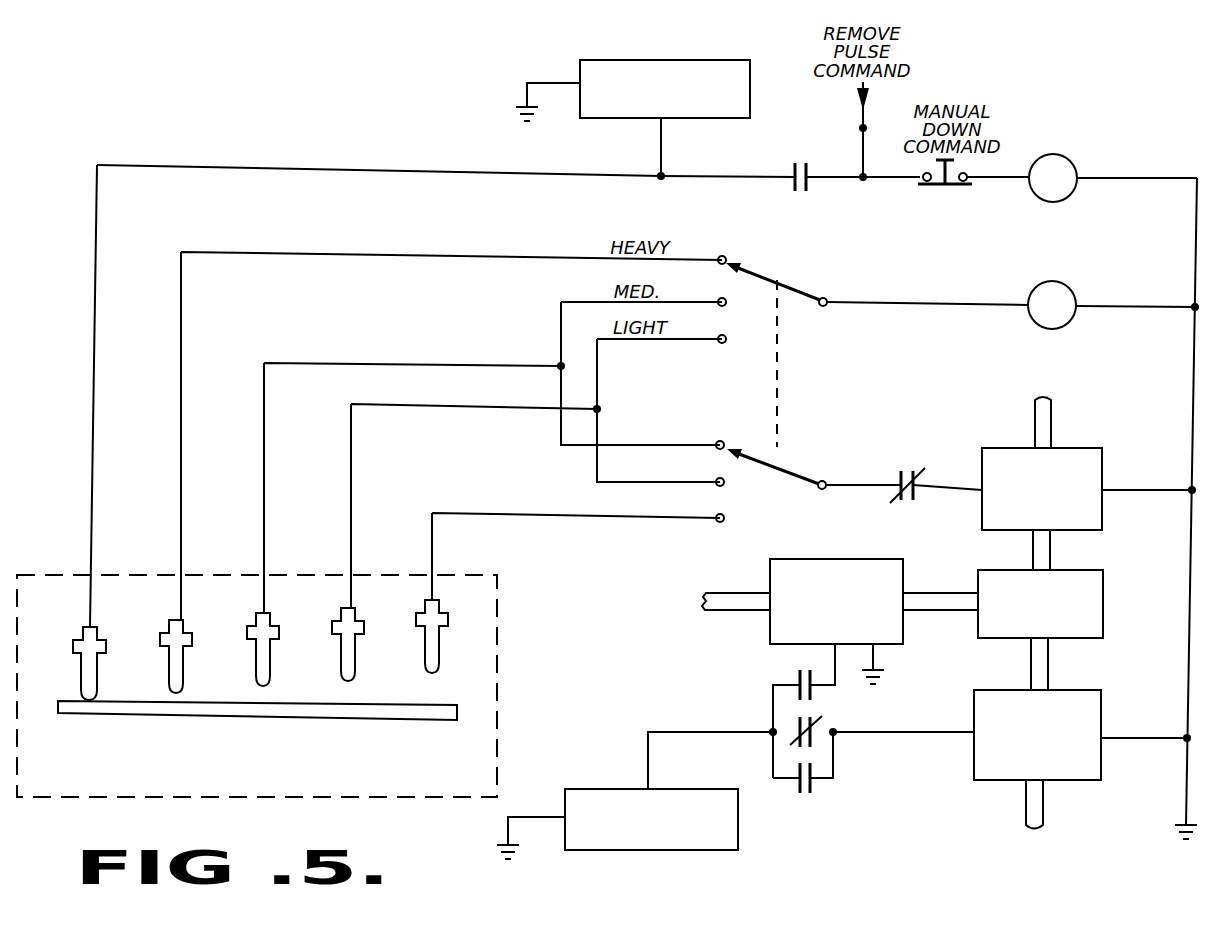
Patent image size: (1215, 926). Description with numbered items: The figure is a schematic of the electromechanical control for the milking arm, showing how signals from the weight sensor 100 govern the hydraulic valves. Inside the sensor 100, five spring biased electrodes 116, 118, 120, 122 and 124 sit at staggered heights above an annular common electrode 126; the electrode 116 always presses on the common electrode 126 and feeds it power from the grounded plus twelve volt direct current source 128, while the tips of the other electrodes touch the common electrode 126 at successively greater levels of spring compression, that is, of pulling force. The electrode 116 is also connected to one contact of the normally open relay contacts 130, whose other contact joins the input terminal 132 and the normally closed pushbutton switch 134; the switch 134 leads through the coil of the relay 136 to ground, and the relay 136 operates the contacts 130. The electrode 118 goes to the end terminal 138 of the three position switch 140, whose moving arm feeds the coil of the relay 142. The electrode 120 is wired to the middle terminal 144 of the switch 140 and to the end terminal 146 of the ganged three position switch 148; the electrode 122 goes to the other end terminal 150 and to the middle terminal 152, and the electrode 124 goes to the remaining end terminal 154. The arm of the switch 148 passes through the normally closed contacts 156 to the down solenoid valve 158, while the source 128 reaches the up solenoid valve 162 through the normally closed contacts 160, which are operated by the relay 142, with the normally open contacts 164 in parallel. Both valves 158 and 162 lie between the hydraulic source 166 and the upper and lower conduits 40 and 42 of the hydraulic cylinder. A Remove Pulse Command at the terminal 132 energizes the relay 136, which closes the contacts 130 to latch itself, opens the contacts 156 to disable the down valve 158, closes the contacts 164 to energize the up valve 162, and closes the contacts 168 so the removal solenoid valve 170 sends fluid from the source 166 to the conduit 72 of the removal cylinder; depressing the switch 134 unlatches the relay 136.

The upper conduit 40 is at (1052, 410).
The lower conduit 42 is at (1044, 820).
The conduit 72 is at (733, 592).
The weight sensor 100 is at (58, 573).
The electrode 116 is at (82, 673).
The electrode 118 is at (168, 668).
The electrode 120 is at (255, 662).
The electrode 122 is at (340, 658).
The electrode 124 is at (425, 658).
The common electrode 126 is at (100, 718).
The voltage source 128 is at (580, 62).
The relay contacts 130 is at (805, 193).
The input terminal 132 is at (860, 128).
The pushbutton switch 134 is at (950, 186).
The relay 136 is at (1058, 201).
The end terminal 138 is at (722, 256).
The three position switch 140 is at (823, 298).
The relay 142 is at (1064, 326).
The middle terminal 144 is at (725, 304).
The end terminal 146 is at (720, 441).
The three position switch 148 is at (822, 481).
The end terminal 150 is at (725, 341).
The middle terminal 152 is at (724, 483).
The end terminal 154 is at (724, 518).
The relay contacts 156 is at (909, 470).
The down solenoid valve 158 is at (1102, 450).
The relay contacts 160 is at (812, 724).
The up solenoid valve 162 is at (1102, 712).
The relay contacts 164 is at (803, 796).
The hydraulic source 166 is at (1104, 598).
The relay contacts 168 is at (797, 680).
The removal solenoid valve 170 is at (900, 566).